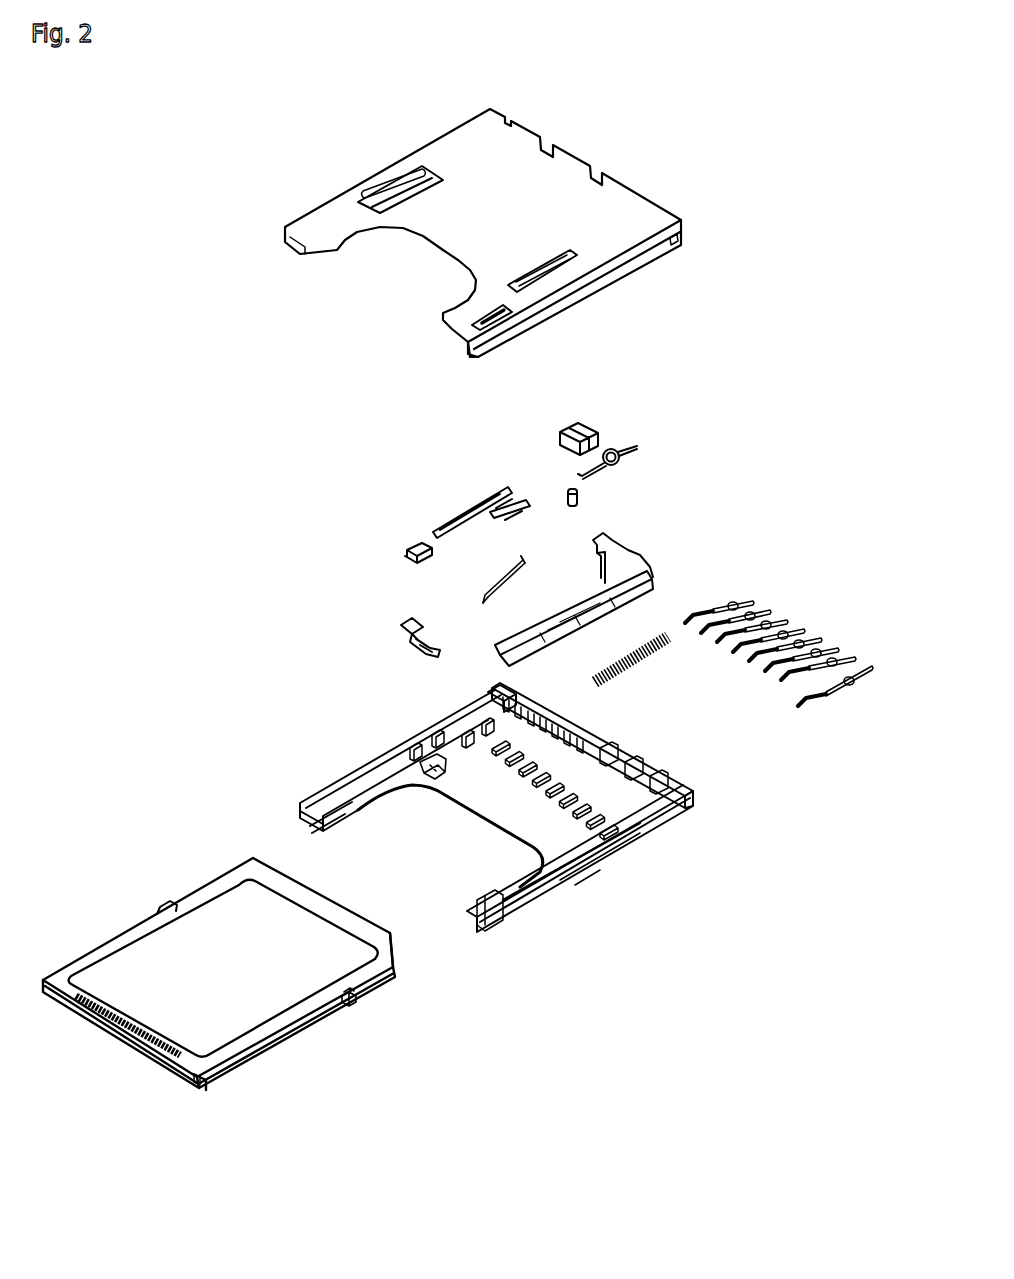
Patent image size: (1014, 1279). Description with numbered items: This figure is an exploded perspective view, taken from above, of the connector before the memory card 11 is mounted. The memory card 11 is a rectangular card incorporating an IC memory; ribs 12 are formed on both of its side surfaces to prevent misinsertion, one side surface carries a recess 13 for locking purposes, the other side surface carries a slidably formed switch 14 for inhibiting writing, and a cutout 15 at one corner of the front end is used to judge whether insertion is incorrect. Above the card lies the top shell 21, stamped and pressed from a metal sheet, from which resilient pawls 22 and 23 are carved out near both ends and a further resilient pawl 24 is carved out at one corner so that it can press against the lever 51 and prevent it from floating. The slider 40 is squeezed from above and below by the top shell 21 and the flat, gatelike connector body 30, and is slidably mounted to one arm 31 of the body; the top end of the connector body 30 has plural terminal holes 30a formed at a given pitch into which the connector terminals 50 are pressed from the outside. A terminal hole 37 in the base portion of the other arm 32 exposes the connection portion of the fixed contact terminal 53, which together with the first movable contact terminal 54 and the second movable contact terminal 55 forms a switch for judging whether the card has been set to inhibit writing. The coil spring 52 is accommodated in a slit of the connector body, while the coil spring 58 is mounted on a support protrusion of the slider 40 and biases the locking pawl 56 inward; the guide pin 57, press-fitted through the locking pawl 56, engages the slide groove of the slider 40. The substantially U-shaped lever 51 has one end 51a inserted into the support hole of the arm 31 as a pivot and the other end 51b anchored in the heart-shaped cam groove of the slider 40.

The memory card 11 is at (218, 1035).
The ribs 12 is at (298, 1027).
The recess 13 is at (355, 1000).
The switch 14 is at (170, 907).
The cutout 15 is at (394, 950).
The top shell 21 is at (515, 152).
The resilient pawl 22 is at (397, 185).
The resilient pawl 23 is at (542, 270).
The resilient pawl 24 is at (493, 322).
The connector body 30 is at (513, 805).
The terminal holes 30a is at (525, 715).
The arm 31 is at (553, 880).
The arm 32 is at (363, 768).
The terminal hole 37 is at (435, 783).
The slider 40 is at (627, 568).
The connector terminals 50 is at (727, 597).
The lever 51 is at (500, 570).
The one end of lever 51a is at (487, 600).
The other end of lever 51b is at (523, 563).
The coil spring 52 is at (658, 653).
The fixed contact terminal 53 is at (407, 637).
The first movable contact terminal 54 is at (420, 542).
The second movable contact terminal 55 is at (475, 537).
The locking pawl 56 is at (567, 430).
The guide pin 57 is at (580, 497).
The coil spring 58 is at (620, 453).